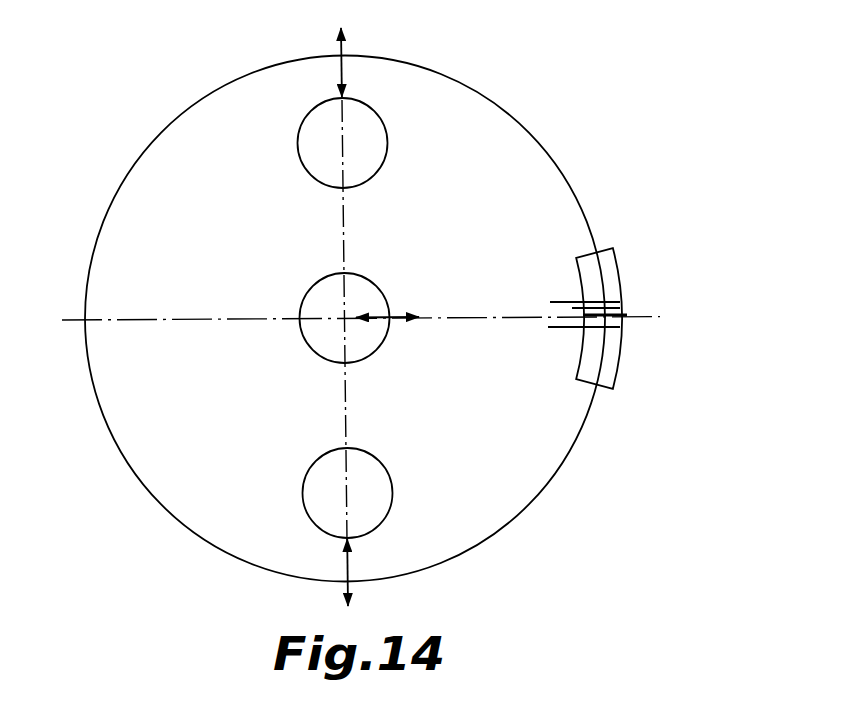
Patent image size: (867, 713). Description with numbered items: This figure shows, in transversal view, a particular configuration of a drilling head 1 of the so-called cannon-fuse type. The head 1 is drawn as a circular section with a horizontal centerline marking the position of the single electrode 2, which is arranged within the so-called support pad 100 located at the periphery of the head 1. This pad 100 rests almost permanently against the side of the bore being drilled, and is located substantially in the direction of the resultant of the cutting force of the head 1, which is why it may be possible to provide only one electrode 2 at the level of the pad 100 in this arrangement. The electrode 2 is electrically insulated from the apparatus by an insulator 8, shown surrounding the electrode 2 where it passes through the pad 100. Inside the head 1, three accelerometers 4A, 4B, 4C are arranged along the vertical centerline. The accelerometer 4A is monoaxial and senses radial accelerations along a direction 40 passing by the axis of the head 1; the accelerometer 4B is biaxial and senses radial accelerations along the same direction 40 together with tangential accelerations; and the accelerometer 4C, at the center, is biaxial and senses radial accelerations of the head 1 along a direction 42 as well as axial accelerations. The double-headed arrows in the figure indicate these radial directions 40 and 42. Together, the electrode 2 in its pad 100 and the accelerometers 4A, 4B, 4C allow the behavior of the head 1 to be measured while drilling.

The head 1 is at (554, 141).
The electrode 2 is at (660, 317).
The accelerometer 4A is at (302, 120).
The accelerometer 4B is at (303, 498).
The accelerometer 4C is at (317, 355).
The insulator 8 is at (622, 303).
The direction 40 is at (342, 67).
The direction 42 is at (380, 313).
The pad 100 is at (613, 255).